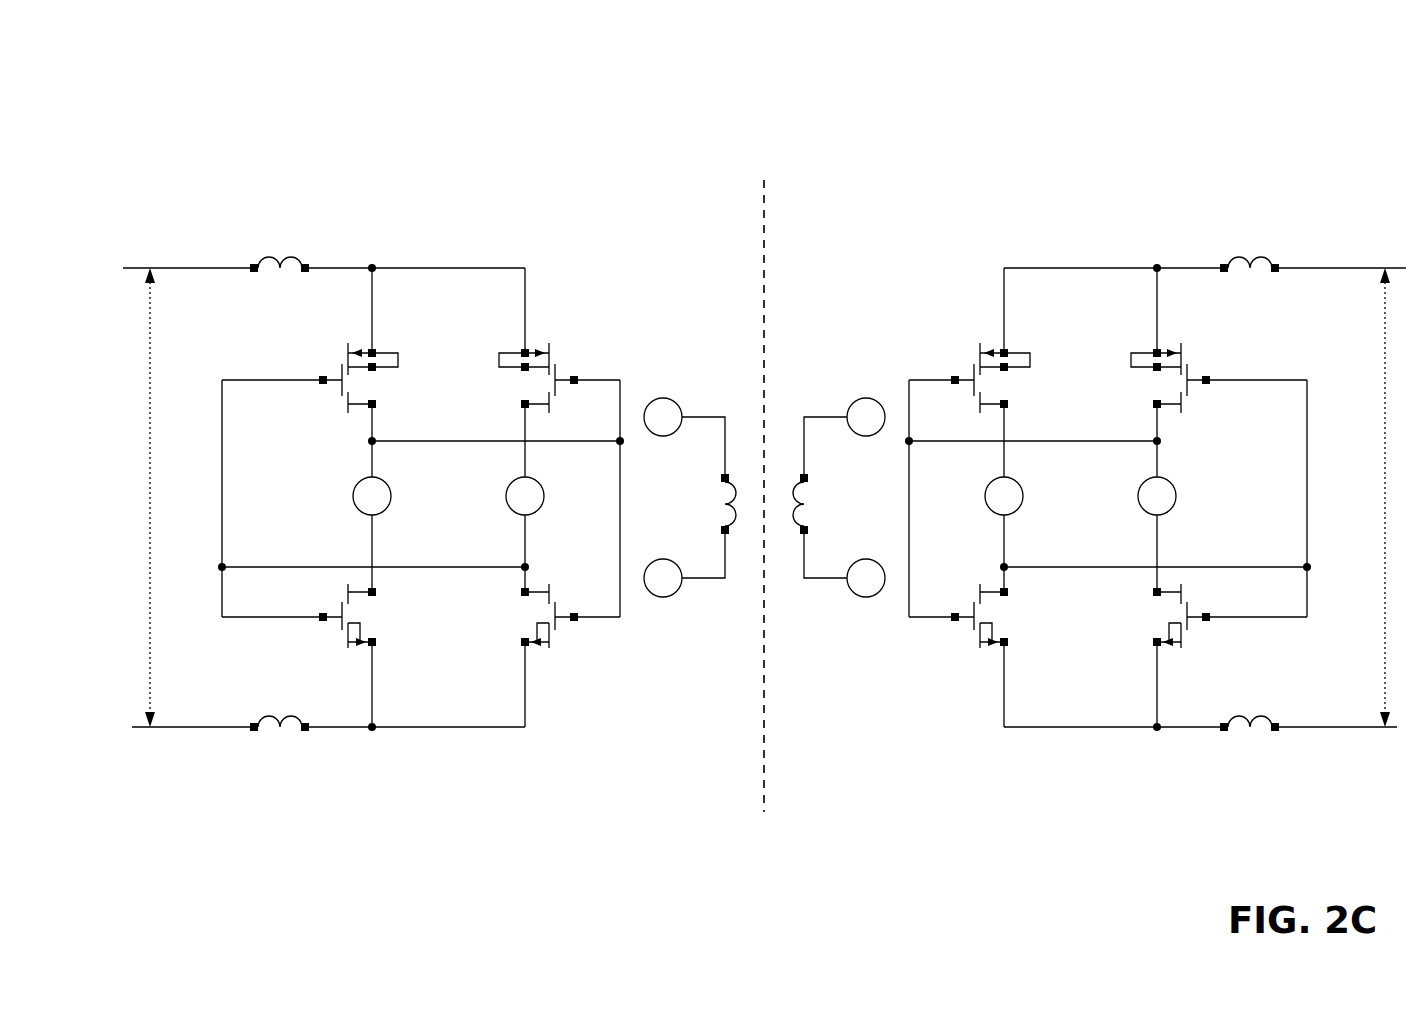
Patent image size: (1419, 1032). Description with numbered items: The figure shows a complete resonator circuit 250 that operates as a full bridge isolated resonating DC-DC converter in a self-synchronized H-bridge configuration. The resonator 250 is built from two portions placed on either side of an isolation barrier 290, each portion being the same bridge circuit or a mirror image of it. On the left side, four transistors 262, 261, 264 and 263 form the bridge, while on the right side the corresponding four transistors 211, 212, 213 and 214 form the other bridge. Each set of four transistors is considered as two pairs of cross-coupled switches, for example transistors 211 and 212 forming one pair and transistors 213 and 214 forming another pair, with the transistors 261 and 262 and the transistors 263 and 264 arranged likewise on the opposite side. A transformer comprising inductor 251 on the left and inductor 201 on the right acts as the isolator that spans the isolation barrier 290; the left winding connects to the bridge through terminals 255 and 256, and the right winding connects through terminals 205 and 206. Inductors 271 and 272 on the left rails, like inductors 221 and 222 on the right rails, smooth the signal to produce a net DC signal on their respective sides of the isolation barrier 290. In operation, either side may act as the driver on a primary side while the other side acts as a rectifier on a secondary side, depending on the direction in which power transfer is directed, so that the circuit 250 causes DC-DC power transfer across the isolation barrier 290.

The resonator 250 is at (170, 40).
The isolation barrier 290 is at (764, 480).
The inductor 271 is at (279, 251).
The inductor 272 is at (279, 710).
The inductor 221 is at (1249, 251).
The inductor 222 is at (1249, 710).
The transistor 262 is at (350, 375).
The transistor 261 is at (547, 375).
The transistor 264 is at (367, 616).
The transistor 263 is at (529, 616).
The transistor 211 is at (982, 375).
The transistor 212 is at (1179, 375).
The transistor 213 is at (1001, 616).
The transistor 214 is at (1163, 616).
The terminal 255 is at (540, 483).
The terminal 256 is at (386, 510).
The terminal 205 is at (990, 483).
The terminal 206 is at (1144, 510).
The inductor 251 is at (706, 497).
The inductor 201 is at (823, 497).